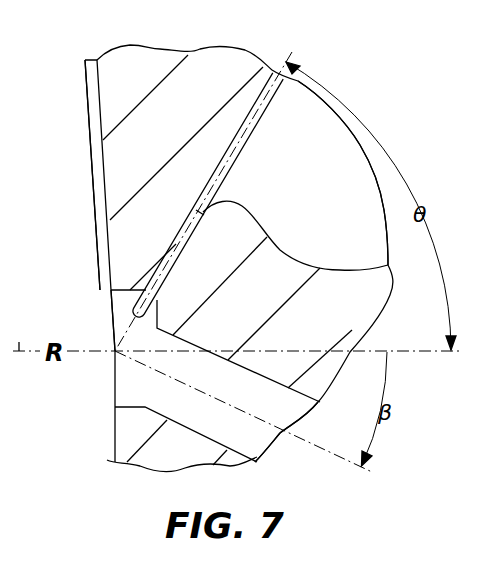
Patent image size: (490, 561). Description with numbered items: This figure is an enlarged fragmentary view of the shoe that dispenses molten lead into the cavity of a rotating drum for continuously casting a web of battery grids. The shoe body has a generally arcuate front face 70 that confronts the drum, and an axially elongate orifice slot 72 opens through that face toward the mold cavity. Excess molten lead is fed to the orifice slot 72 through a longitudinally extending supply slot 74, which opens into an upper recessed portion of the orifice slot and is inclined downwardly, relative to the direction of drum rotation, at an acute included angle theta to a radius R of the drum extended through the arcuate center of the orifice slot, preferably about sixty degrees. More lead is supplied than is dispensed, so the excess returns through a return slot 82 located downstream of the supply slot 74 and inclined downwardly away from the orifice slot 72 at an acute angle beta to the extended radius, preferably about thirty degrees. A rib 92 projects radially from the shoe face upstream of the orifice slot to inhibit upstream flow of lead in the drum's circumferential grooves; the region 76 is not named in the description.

The arcuate front face 70 is at (100, 112).
The rib 92 is at (96, 183).
The orifice slot 72 is at (118, 307).
The supply slot 74 is at (175, 262).
The body portion 76 is at (342, 176).
The return slot 82 is at (250, 438).